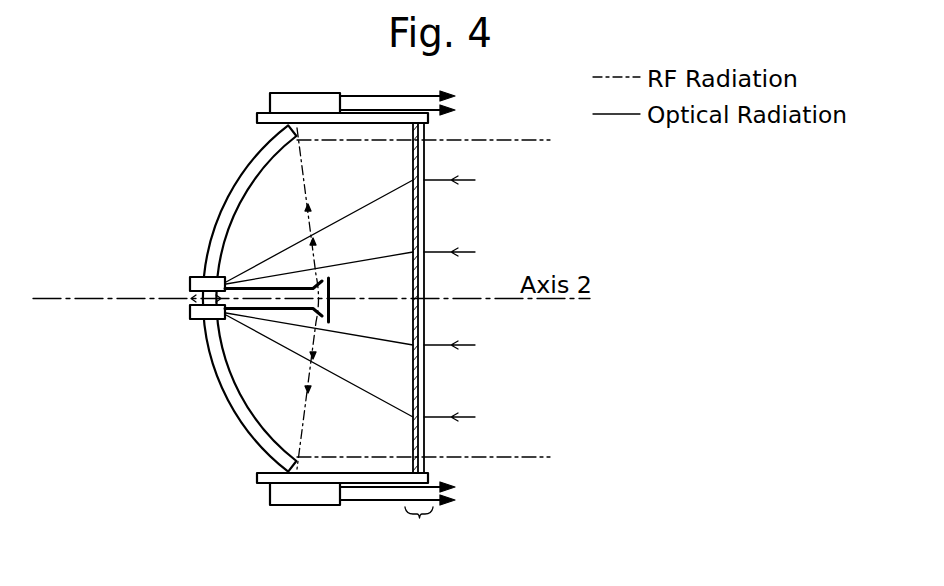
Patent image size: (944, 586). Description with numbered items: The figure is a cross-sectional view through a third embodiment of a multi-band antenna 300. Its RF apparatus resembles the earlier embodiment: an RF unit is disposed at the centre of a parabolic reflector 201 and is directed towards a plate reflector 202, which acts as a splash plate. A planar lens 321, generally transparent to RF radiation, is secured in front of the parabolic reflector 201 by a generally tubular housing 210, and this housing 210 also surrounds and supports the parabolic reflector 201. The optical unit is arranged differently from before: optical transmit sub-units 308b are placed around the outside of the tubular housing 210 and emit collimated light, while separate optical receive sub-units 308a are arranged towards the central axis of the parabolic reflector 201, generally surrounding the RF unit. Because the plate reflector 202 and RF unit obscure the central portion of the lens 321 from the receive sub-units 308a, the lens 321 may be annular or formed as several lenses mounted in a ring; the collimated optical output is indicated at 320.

The antenna 300 is at (136, 224).
The parabolic reflector 201 is at (229, 206).
The plate reflector 202 is at (331, 287).
The optical receive sub-unit 308a is at (192, 312).
The optical transmit sub-unit 308b is at (282, 105).
The tubular housing 210 is at (257, 477).
The planar lens 321 is at (424, 215).
The optical beams 320 is at (417, 525).